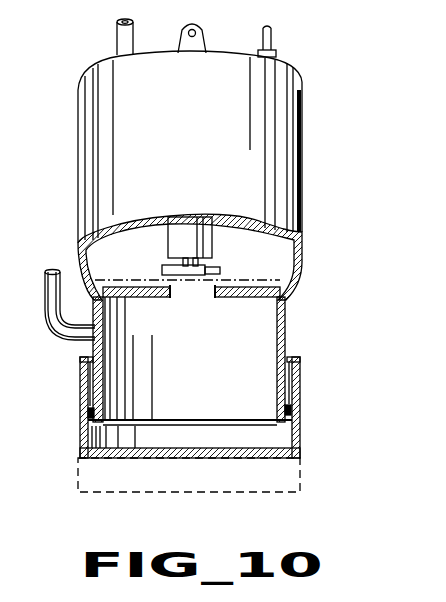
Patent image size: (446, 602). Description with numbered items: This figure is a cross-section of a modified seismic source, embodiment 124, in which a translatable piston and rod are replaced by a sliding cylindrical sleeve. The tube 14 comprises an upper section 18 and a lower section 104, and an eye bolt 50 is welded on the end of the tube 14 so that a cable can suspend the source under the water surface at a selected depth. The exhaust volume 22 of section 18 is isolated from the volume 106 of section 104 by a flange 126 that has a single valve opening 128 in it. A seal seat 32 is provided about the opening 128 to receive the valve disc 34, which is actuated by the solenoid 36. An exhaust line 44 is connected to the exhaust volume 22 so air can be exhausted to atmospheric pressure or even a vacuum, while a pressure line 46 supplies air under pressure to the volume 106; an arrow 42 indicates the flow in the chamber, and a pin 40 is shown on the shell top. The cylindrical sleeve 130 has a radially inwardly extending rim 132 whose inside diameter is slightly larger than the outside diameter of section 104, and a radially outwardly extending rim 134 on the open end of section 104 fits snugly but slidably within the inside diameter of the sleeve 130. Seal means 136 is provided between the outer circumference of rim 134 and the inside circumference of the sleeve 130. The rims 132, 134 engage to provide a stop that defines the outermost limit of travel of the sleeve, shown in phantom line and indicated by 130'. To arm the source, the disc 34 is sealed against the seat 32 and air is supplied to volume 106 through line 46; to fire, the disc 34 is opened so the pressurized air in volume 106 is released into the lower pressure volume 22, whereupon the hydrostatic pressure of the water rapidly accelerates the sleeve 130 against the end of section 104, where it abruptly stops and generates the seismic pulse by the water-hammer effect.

The tube 14 is at (300, 290).
The section 18 is at (304, 232).
The exhaust volume 22 is at (152, 243).
The seal seat 32 is at (222, 285).
The valve disc 34 is at (213, 266).
The solenoid 36 is at (190, 222).
The terminal pin 40 is at (272, 38).
The flow direction arrow 42 is at (160, 260).
The exhaust line 44 is at (118, 38).
The pressure line 46 is at (60, 341).
The eye bolt 50 is at (200, 36).
The section 104 is at (284, 343).
The volume 106 is at (203, 358).
The embodiment 124 is at (312, 270).
The flange 126 is at (246, 298).
The valve opening 128 is at (175, 298).
The cylindrical sleeve 130 is at (220, 407).
The cylindrical sleeve in outermost position 130' is at (222, 475).
The radially inwardly extending rim 132 is at (289, 363).
The radially outwardly extending rim 134 is at (284, 408).
The seal means 136 is at (88, 414).